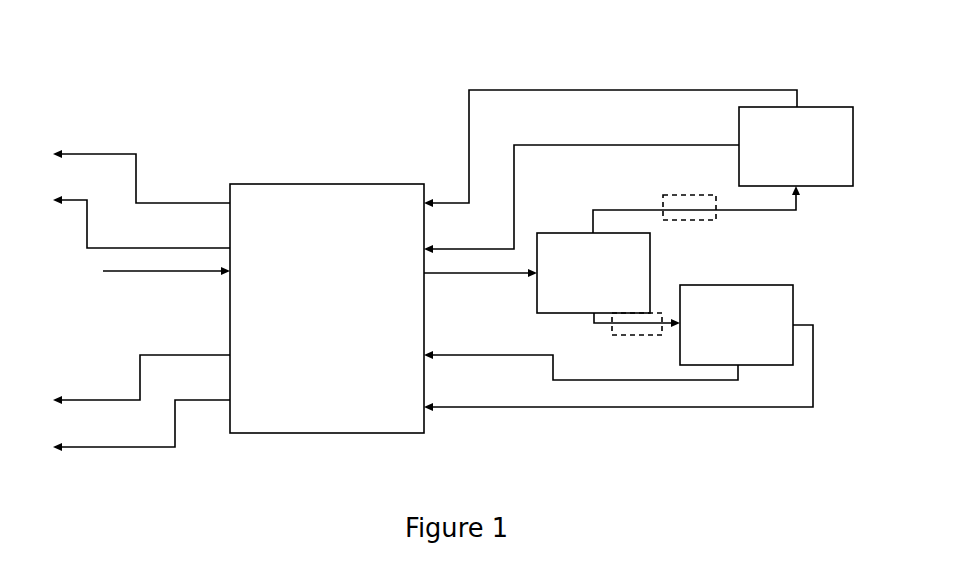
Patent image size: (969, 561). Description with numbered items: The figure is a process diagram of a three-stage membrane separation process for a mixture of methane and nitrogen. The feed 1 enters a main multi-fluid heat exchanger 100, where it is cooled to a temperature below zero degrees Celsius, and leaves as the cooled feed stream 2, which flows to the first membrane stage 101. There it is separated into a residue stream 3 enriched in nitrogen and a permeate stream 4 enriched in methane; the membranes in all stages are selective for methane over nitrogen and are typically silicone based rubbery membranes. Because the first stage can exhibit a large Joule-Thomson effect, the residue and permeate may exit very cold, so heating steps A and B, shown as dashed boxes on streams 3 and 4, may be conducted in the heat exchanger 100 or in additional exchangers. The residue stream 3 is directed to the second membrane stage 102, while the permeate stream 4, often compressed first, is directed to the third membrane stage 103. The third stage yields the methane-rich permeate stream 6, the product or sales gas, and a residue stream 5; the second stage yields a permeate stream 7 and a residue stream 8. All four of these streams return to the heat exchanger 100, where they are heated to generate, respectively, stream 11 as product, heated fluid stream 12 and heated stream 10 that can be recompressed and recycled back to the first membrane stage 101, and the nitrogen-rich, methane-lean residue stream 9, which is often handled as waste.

The multi-fluid heat exchanger 100 is at (327, 308).
The first membrane stage 101 is at (593, 273).
The second membrane stage 102 is at (796, 146).
The third membrane stage 103 is at (736, 325).
The feed 1 is at (138, 278).
The cooled feed stream 2 is at (488, 280).
The residue stream 3 is at (750, 212).
The permeate stream 4 is at (594, 328).
The residue stream 5 is at (813, 370).
The methane-rich permeate stream 6 is at (482, 356).
The permeate stream 7 is at (568, 143).
The residue stream 8 is at (607, 88).
The residue stream 9 is at (143, 190).
The heated stream 10 is at (98, 245).
The stream 11 is at (153, 352).
The heated fluid stream 12 is at (118, 453).
The heating step A is at (687, 221).
The heating step B is at (640, 336).